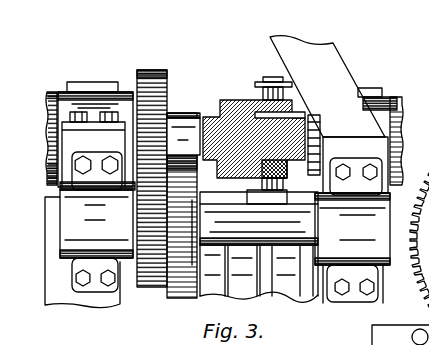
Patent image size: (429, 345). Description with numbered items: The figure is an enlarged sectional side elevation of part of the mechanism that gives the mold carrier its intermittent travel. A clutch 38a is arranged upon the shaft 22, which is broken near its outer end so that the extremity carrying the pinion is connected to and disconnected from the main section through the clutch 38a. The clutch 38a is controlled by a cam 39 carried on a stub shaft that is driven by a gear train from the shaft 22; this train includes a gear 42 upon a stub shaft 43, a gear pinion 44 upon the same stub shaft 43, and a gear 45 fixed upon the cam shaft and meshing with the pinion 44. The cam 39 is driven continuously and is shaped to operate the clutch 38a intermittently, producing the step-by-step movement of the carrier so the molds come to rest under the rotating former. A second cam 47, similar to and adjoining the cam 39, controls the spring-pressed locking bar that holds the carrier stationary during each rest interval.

The gear 42 is at (160, 71).
The shaft 22 is at (186, 119).
The clutch 38a is at (237, 98).
The stub shaft 43 is at (312, 233).
The gear pinion 44 is at (192, 232).
The gear 45 is at (183, 290).
The cam 47 is at (250, 290).
The cam 39 is at (290, 287).